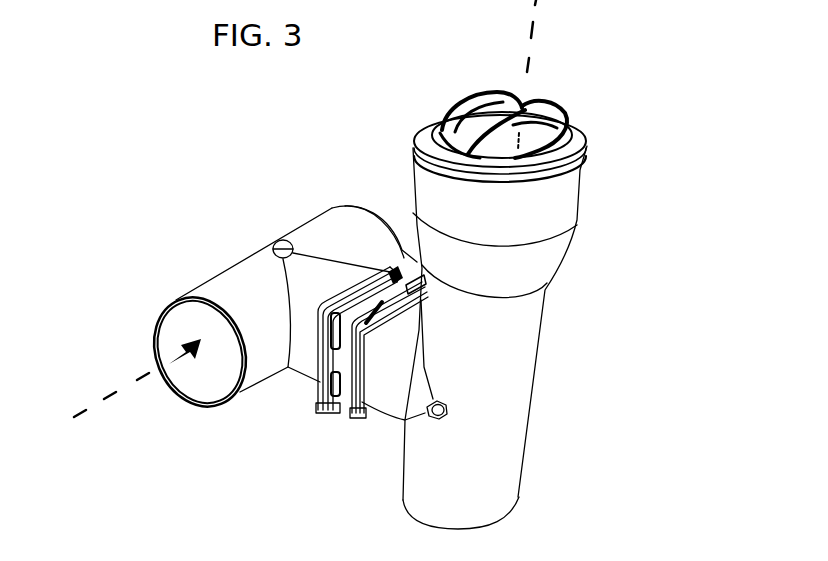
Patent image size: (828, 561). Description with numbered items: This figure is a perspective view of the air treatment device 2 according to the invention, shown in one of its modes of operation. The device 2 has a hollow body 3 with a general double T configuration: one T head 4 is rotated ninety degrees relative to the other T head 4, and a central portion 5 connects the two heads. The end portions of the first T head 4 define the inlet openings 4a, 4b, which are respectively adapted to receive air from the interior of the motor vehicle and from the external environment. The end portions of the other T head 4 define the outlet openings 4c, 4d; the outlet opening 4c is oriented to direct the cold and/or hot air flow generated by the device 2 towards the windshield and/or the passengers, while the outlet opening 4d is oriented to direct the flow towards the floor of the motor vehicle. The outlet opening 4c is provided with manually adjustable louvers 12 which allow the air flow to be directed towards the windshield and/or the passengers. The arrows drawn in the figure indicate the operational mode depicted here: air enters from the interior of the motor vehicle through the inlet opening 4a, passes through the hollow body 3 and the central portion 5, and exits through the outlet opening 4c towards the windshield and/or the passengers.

The device 2 is at (223, 205).
The hollow body 3 is at (541, 375).
The T head 4 is at (218, 288).
The inlet opening 4a is at (212, 378).
The inlet opening 4b is at (394, 240).
The outlet opening 4c is at (577, 140).
The outlet opening 4d is at (480, 530).
The central portion 5 is at (397, 391).
The manually adjustable louvers 12 is at (538, 98).